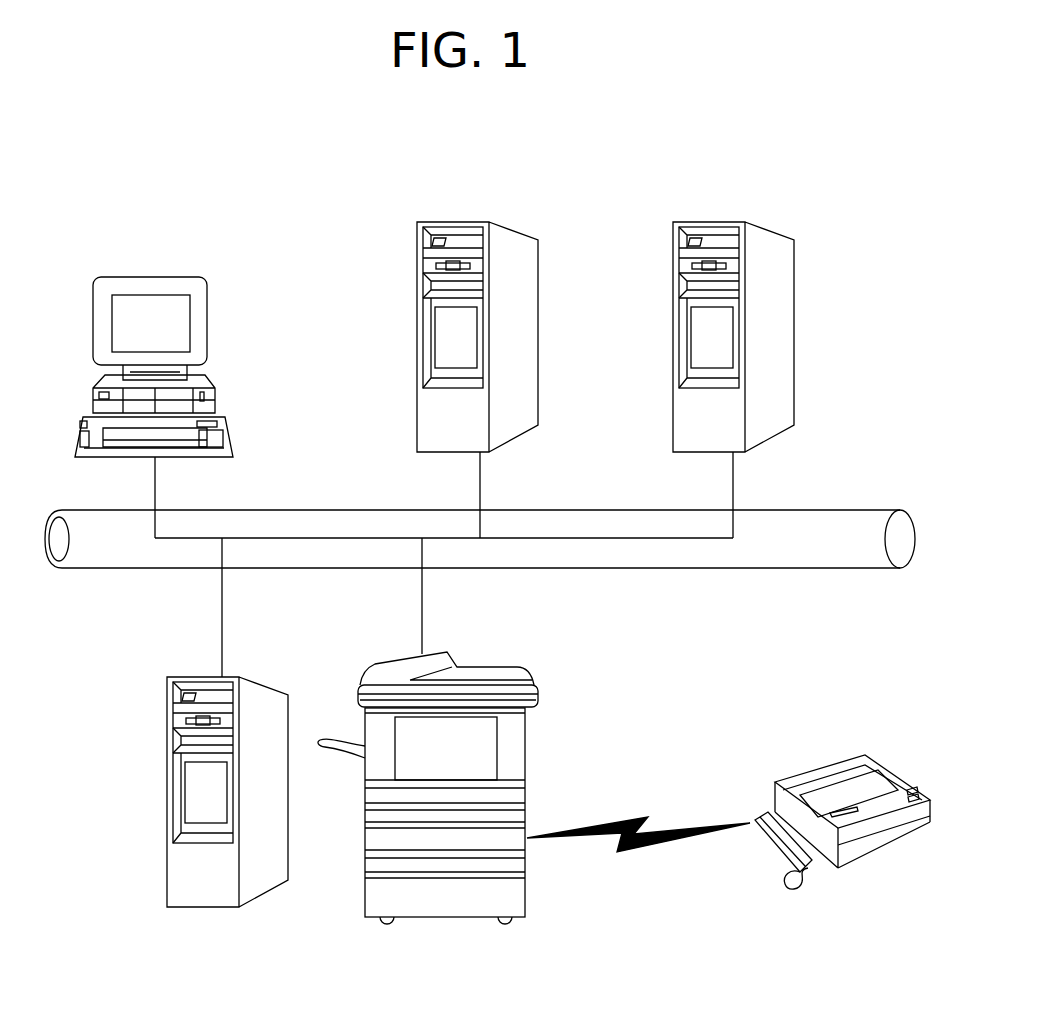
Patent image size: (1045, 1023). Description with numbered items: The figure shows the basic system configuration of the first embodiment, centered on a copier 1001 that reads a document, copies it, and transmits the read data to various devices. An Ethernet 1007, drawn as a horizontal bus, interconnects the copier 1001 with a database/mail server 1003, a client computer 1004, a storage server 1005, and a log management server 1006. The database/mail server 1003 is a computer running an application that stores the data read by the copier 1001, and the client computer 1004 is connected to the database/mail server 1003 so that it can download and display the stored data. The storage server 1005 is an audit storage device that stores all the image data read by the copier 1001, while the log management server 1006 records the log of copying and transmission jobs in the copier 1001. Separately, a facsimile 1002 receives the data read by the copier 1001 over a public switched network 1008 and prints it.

The copier 1001 is at (510, 642).
The facsimile 1002 is at (807, 772).
The database/mail server 1003 is at (283, 660).
The client computer 1004 is at (207, 325).
The storage server 1005 is at (538, 323).
The log management server 1006 is at (794, 323).
The Ethernet 1007 is at (648, 568).
The public switched network 1008 is at (633, 817).